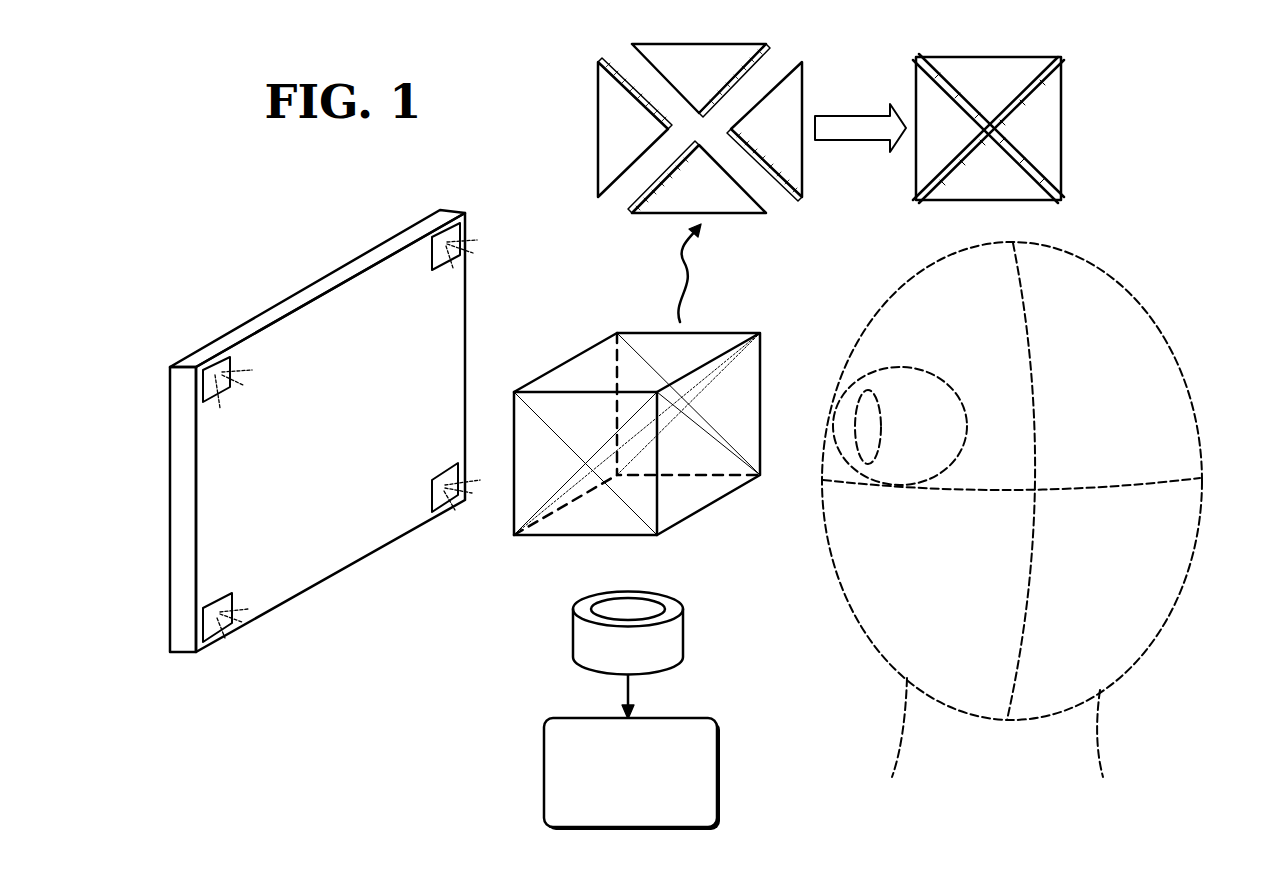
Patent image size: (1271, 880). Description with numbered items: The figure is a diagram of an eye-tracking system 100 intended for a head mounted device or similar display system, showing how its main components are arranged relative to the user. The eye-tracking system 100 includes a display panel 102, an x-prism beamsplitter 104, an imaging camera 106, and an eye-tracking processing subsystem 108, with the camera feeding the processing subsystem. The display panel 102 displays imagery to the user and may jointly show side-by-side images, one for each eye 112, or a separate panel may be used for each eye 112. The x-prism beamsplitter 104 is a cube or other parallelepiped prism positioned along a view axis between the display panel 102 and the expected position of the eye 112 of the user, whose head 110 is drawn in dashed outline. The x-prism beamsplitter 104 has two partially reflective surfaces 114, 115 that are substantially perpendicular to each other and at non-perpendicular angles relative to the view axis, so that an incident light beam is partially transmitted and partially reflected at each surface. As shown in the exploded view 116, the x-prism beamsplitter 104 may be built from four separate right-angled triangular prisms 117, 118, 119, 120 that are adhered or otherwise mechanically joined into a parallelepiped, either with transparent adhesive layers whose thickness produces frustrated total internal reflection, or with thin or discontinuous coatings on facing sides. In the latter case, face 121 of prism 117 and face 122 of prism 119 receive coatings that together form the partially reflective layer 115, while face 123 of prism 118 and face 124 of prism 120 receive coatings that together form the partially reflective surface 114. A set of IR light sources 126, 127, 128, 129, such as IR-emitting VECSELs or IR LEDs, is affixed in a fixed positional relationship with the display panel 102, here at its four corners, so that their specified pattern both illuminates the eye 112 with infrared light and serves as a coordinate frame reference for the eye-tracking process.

The eye-tracking system 100 is at (511, 598).
The display panel 102 is at (456, 331).
The x-prism beamsplitter 104 is at (644, 325).
The imaging camera 106 is at (685, 630).
The eye-tracking processing subsystem 108 is at (632, 774).
The head 110 is at (880, 652).
The eye 112 is at (953, 390).
The partially reflective surface 114 is at (700, 377).
The partially reflective surface 115 is at (700, 445).
The view 116 is at (576, 58).
The right-angled triangular prism 117 is at (597, 147).
The right-angled triangular prism 118 is at (687, 42).
The right-angled triangular prism 119 is at (804, 78).
The right-angled triangular prism 120 is at (735, 215).
The face of prism 117 121 is at (601, 57).
The face of prism 119 122 is at (797, 200).
The face of prism 118 123 is at (771, 47).
The face of prism 120 124 is at (627, 211).
The IR light source 126 is at (231, 360).
The IR light source 127 is at (432, 256).
The IR light source 128 is at (432, 493).
The IR light source 129 is at (232, 599).